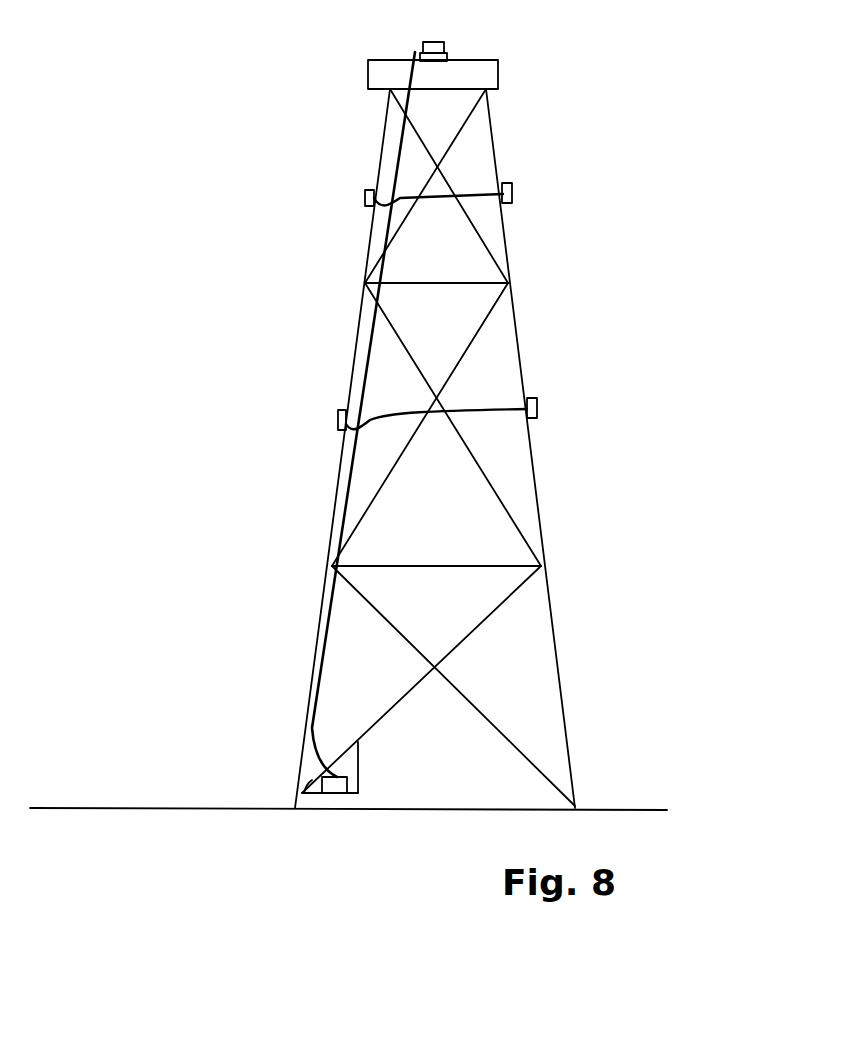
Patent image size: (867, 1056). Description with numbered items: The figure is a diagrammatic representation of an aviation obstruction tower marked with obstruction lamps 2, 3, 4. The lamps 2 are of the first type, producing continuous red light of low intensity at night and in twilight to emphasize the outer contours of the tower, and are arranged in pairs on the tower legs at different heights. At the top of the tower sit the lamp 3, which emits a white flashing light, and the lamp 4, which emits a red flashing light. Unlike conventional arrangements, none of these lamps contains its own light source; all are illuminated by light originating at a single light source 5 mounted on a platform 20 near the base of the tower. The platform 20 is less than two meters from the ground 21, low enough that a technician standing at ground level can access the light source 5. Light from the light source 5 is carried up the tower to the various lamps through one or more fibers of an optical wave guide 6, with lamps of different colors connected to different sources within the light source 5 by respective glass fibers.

The lamp 2 is at (364, 196).
The lamp 3 is at (447, 58).
The lamp 4 is at (438, 43).
The light source 5 is at (357, 784).
The optical wave guide 6 is at (328, 652).
The platform 20 is at (310, 792).
The ground 21 is at (428, 810).